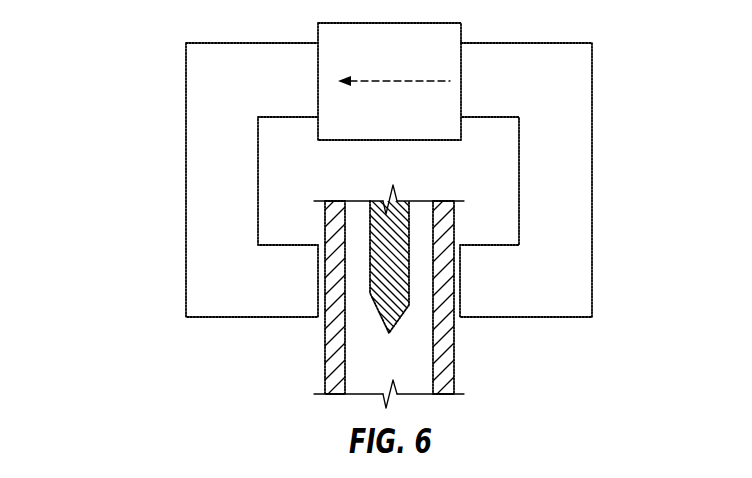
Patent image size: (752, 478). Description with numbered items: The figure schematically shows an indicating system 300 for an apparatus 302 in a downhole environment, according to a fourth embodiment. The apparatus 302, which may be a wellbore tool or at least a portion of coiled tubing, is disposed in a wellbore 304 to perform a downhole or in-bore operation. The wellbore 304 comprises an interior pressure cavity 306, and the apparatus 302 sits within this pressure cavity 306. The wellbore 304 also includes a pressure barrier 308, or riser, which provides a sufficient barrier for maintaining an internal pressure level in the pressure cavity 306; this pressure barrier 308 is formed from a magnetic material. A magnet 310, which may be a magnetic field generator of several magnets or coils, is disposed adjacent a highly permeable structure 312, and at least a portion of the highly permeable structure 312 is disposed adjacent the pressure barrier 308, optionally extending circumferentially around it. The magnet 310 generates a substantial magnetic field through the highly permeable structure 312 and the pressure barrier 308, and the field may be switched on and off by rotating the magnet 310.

The indicating system 300 is at (128, 44).
The apparatus 302 is at (398, 317).
The wellbore 304 is at (455, 230).
The pressure cavity 306 is at (356, 306).
The pressure barrier 308 is at (336, 348).
The magnet 310 is at (462, 35).
The highly permeable structure 312 is at (593, 156).